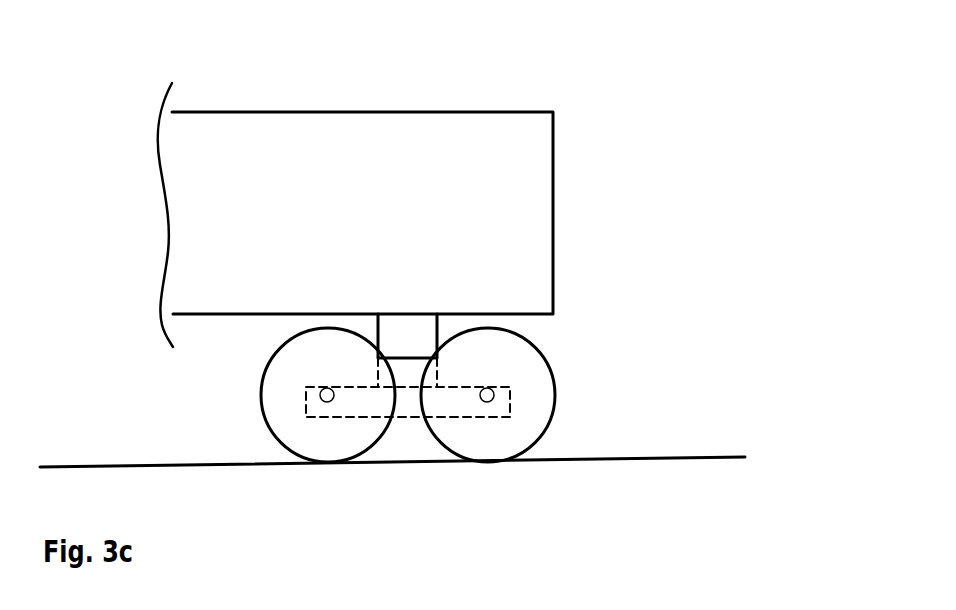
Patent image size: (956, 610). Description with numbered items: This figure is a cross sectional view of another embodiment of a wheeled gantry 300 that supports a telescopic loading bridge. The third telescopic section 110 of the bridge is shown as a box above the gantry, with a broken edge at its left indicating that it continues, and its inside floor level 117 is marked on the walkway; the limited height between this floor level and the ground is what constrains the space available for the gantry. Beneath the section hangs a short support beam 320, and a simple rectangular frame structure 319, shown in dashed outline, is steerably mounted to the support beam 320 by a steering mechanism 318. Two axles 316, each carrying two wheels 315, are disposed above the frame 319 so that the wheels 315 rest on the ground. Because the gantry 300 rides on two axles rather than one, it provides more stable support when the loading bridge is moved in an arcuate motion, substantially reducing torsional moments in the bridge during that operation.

The third telescopic section 110 is at (333, 127).
The inside floor level 117 is at (130, 215).
The wheeled gantry 300 is at (710, 87).
The wheels 315 is at (307, 359).
The axles 316 is at (482, 383).
The steering mechanism 318 is at (407, 372).
The rectangular frame structure 319 is at (510, 415).
The support beam 320 is at (408, 328).